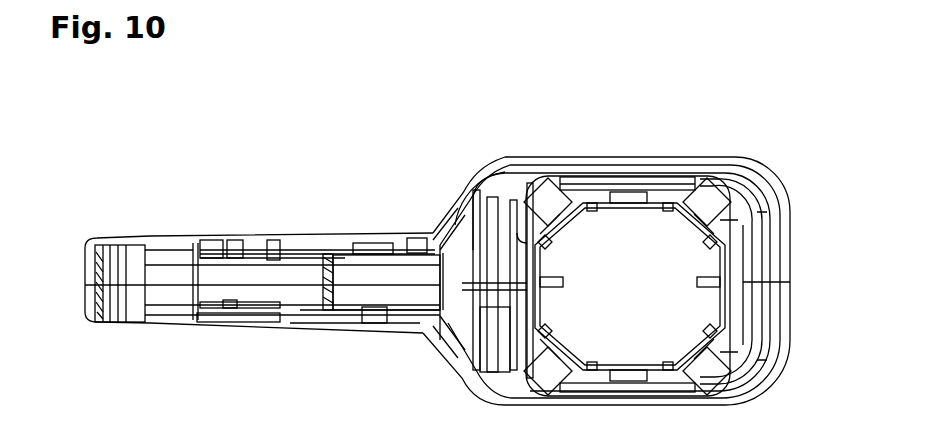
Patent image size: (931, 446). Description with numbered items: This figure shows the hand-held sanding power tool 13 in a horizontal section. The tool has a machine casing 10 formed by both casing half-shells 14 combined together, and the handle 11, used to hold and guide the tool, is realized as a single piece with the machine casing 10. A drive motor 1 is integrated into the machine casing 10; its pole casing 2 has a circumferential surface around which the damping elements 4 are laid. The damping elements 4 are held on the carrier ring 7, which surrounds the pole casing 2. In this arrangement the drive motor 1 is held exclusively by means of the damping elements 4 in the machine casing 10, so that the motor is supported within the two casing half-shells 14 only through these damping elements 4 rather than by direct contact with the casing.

The drive motor 1 is at (642, 294).
The pole casing 2 is at (660, 195).
The damping elements 4 is at (693, 345).
The carrier ring 7 is at (537, 328).
The machine casing 10 is at (578, 157).
The handle 11 is at (247, 232).
The hand-held sanding power tool 13 is at (452, 170).
The casing half-shells 14 is at (460, 208).